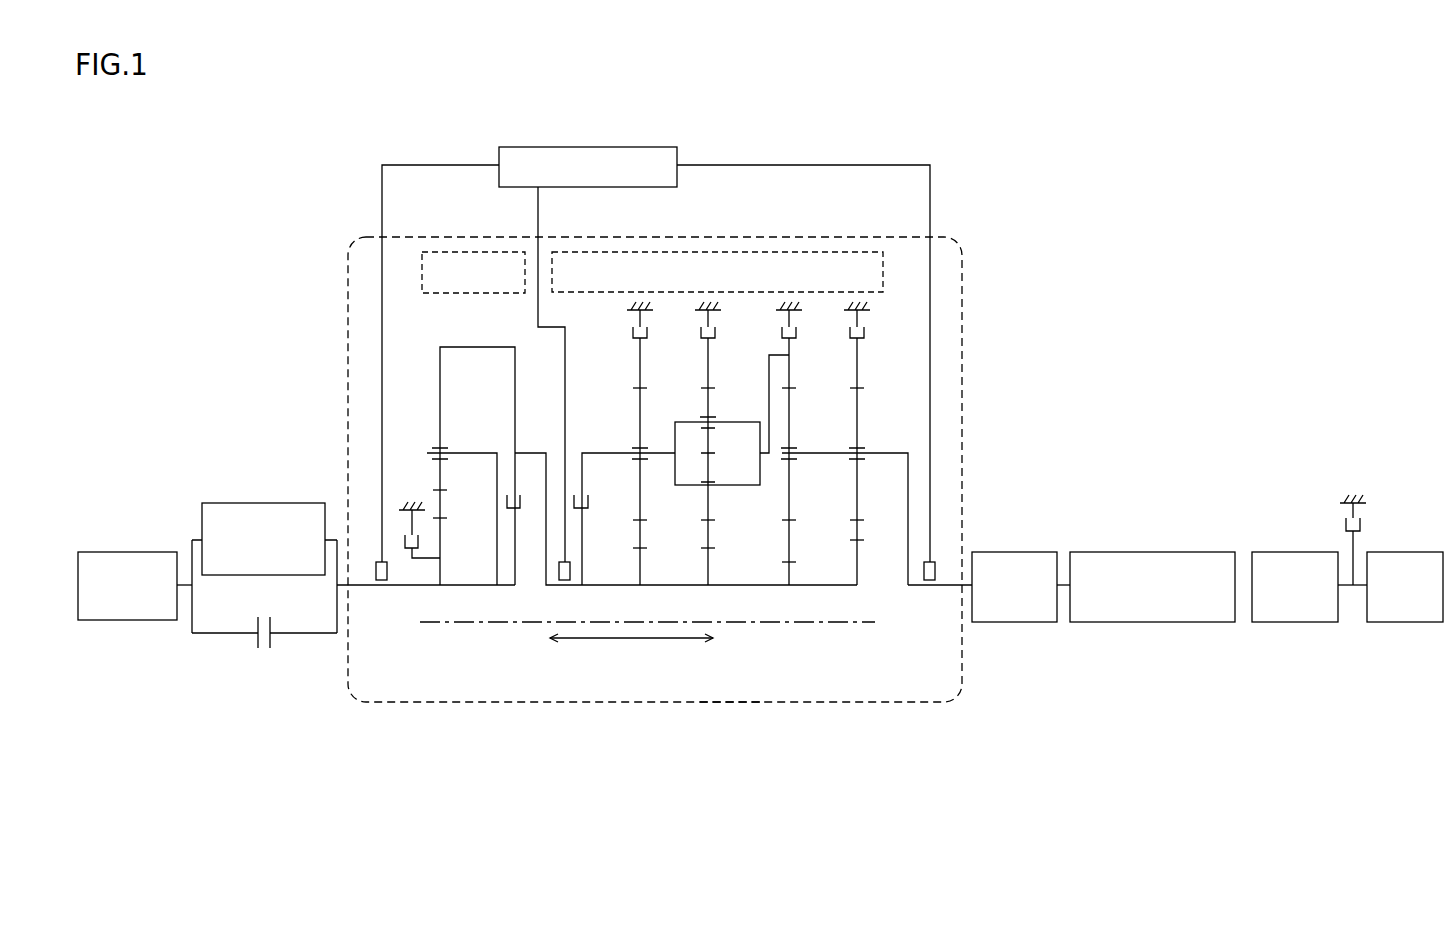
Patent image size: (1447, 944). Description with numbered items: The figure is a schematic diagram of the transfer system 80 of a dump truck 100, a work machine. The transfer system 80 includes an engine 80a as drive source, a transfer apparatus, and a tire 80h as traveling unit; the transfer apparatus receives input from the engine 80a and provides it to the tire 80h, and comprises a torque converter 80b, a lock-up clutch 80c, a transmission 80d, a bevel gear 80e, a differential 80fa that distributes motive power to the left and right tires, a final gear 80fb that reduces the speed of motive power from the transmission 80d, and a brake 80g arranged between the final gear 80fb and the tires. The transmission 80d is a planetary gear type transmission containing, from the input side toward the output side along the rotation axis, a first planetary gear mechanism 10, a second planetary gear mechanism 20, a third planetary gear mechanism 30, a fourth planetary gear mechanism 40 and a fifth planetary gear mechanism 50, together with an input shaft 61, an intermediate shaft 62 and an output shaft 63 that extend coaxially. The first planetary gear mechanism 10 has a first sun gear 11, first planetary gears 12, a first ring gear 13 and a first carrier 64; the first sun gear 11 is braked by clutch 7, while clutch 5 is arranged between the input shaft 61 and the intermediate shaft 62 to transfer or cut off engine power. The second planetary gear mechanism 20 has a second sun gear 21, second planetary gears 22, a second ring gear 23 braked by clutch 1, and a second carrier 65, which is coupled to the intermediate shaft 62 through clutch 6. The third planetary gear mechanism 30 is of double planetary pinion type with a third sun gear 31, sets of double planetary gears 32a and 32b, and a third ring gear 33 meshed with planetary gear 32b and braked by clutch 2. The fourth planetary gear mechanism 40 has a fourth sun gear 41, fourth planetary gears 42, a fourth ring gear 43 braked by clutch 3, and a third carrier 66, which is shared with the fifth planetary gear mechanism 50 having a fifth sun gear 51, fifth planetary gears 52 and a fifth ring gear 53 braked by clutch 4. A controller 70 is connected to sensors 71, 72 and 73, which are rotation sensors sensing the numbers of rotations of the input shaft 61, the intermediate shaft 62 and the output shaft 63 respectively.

The dump truck 100 is at (1018, 103).
The controller 70 is at (612, 147).
The transfer system 80 is at (622, 718).
The engine 80a is at (125, 552).
The torque converter 80b is at (247, 503).
The lock-up clutch 80c is at (255, 640).
The transmission 80d is at (745, 703).
The bevel gear 80e is at (997, 551).
The differential 80fa is at (1168, 551).
The final gear 80fb is at (1265, 551).
The brake 80g is at (1360, 525).
The tire 80h is at (1385, 551).
The sensor 71 is at (380, 560).
The sensor 72 is at (562, 560).
The sensor 73 is at (932, 560).
The input shaft 61 is at (432, 587).
The intermediate shaft 62 is at (745, 587).
The output shaft 63 is at (912, 587).
The first carrier 64 is at (487, 452).
The second carrier 65 is at (598, 452).
The third carrier 66 is at (836, 451).
The first ring gear 13 is at (443, 368).
The first planetary gear mechanism 10 is at (453, 444).
The first planetary gear 12 is at (443, 490).
The first sun gear 11 is at (443, 540).
The clutch 7 is at (405, 534).
The clutch 5 is at (520, 500).
The clutch 6 is at (588, 500).
The clutch 1 is at (647, 332).
The clutch 2 is at (715, 332).
The clutch 3 is at (796, 332).
The clutch 4 is at (864, 332).
The second ring gear 23 is at (640, 360).
The third ring gear 33 is at (710, 352).
The fourth ring gear 43 is at (789, 368).
The fifth ring gear 53 is at (857, 355).
The second planetary gear mechanism 20 is at (652, 442).
The third planetary gear mechanism 30 is at (717, 417).
The fourth planetary gear mechanism 40 is at (798, 447).
The fifth planetary gear mechanism 50 is at (865, 443).
The planetary gear 32b is at (711, 437).
The planetary gear 32a is at (708, 505).
The second planetary gear 22 is at (640, 505).
The second sun gear 21 is at (640, 552).
The third sun gear 31 is at (708, 552).
The fourth planetary gear 42 is at (789, 505).
The fourth sun gear 41 is at (789, 565).
The fifth planetary gear 52 is at (857, 478).
The fifth sun gear 51 is at (857, 540).